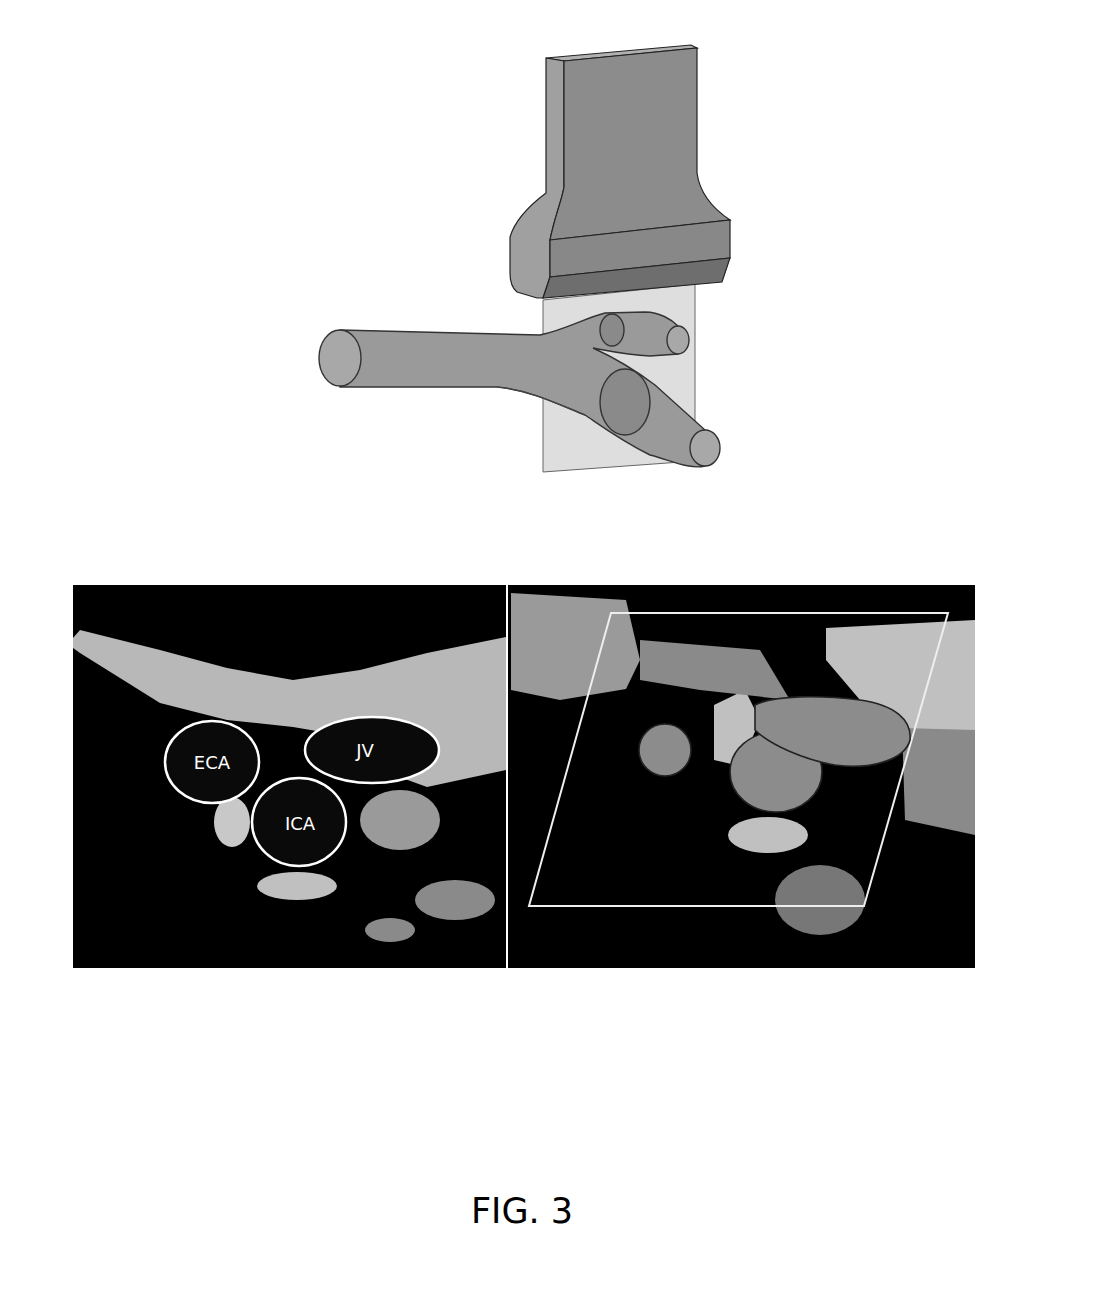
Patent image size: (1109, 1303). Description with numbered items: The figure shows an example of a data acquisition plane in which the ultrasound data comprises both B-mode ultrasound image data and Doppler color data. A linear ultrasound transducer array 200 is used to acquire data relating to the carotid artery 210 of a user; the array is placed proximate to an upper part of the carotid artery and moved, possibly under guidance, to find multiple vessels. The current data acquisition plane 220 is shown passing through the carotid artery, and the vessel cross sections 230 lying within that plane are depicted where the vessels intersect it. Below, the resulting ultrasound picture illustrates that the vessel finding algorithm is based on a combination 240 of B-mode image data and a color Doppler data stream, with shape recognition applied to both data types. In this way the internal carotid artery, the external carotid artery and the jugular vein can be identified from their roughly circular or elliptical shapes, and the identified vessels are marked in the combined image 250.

The linear ultrasound transducer array 200 is at (697, 110).
The carotid artery 210 is at (519, 288).
The data acquisition plane 220 is at (695, 323).
The vessel cross sections 230 is at (622, 342).
The combination of B-mode image data and color Doppler data stream 240 is at (741, 776).
The segmented vessel contours 250 is at (672, 724).